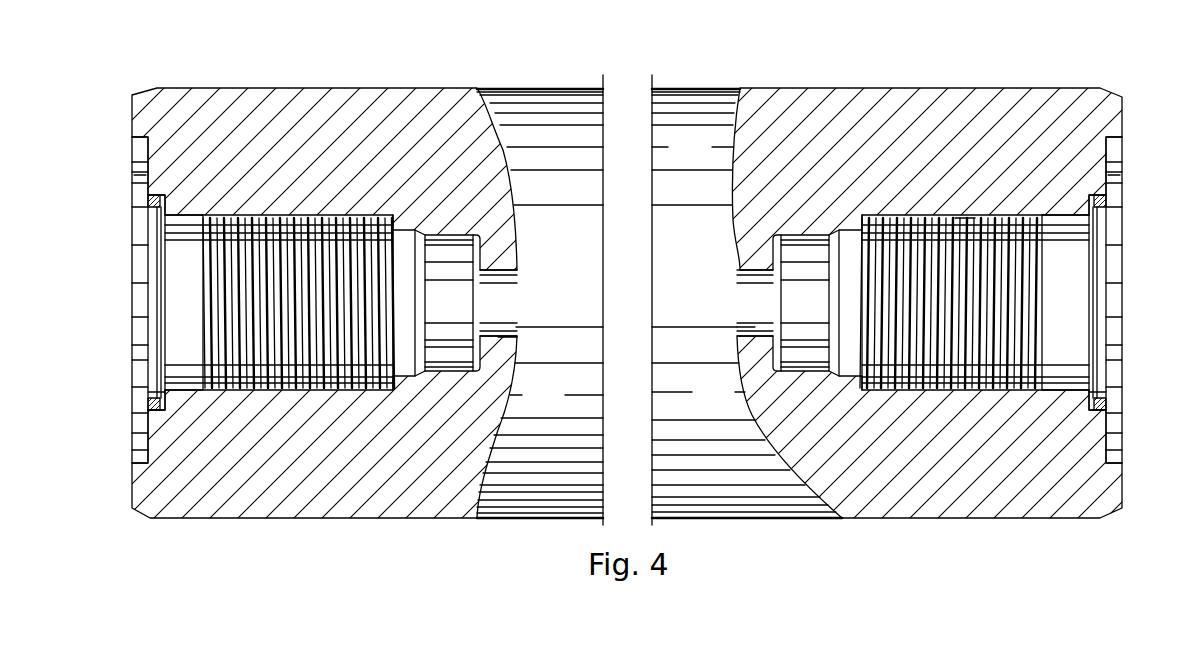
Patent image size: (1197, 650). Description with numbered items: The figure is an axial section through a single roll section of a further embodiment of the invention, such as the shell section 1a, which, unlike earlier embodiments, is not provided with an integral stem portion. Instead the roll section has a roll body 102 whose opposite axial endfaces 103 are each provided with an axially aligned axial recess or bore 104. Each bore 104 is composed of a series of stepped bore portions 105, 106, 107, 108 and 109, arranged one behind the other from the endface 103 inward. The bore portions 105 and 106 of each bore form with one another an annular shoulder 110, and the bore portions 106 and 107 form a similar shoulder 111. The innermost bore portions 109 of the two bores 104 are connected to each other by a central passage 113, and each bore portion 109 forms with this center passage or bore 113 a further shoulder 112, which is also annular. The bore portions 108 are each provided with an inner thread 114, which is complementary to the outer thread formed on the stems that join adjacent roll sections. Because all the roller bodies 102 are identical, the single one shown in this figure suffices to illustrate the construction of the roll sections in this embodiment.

The shell section 1a is at (511, 76).
The roll body 102 is at (674, 160).
The axial endface 103 is at (132, 113).
The axial recess or bore 104 is at (185, 304).
The bore portion 105 is at (133, 143).
The bore portion 106 is at (152, 205).
The bore portion 107 is at (168, 375).
The bore portion 108 is at (145, 395).
The bore portion 109 is at (430, 271).
The annular shoulder 110 is at (143, 175).
The shoulder 111 is at (150, 252).
The shoulder 112 is at (482, 339).
The passage 113 is at (507, 335).
The inner thread 114 is at (243, 230).